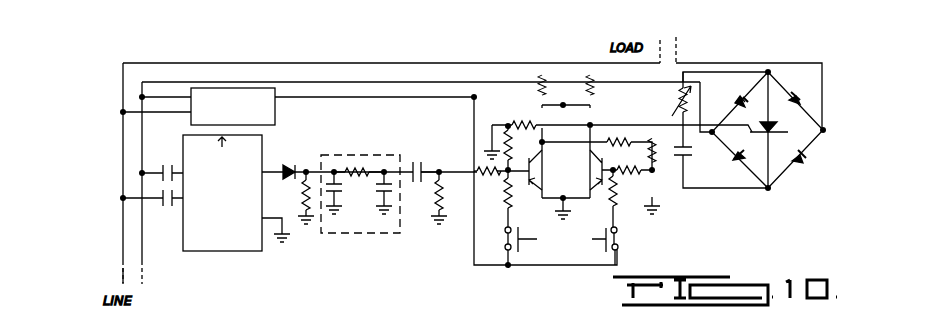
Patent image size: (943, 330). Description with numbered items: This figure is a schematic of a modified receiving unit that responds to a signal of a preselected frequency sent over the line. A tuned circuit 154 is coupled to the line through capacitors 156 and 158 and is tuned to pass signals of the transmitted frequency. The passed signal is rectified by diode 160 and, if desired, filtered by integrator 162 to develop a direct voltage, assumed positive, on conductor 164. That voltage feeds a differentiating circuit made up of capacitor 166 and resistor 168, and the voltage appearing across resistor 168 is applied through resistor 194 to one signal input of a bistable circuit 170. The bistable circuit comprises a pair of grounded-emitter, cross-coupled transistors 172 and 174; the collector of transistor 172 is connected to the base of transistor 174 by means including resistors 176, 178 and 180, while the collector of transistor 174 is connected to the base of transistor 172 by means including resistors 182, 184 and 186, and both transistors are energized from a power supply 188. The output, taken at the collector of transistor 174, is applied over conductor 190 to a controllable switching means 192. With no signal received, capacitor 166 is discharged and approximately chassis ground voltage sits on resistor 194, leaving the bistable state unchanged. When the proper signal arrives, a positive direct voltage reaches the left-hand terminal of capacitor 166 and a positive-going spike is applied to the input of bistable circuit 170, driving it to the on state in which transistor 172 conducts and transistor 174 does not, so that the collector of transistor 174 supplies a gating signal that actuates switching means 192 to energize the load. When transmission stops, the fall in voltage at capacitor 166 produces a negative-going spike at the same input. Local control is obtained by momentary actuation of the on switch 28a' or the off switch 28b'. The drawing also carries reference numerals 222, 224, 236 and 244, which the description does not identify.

The tuned circuit 154 is at (213, 254).
The capacitor 156 is at (165, 170).
The capacitor 158 is at (165, 200).
The diode 160 is at (289, 165).
The integrator 162 is at (350, 155).
The conductor 164 is at (413, 160).
The capacitor 166 is at (423, 164).
The resistor 168 is at (437, 197).
The bistable circuit 170 is at (613, 116).
The transistor 172 is at (538, 165).
The transistor 174 is at (594, 170).
The resistor 176 is at (636, 137).
The resistor 178 is at (661, 186).
The resistor 180 is at (641, 167).
The resistor 182 is at (527, 107).
The resistor 184 is at (487, 140).
The resistor 186 is at (500, 124).
The power supply 188 is at (244, 88).
The conductor 190 is at (650, 122).
The controllable switching means 192 is at (837, 80).
The resistor 194 is at (488, 180).
The on switch 28a' is at (510, 243).
The off switch 28b' is at (581, 250).
The conductor 222 is at (606, 3).
The conductor 224 is at (773, 0).
The load 236 is at (681, 14).
The conductor 244 is at (287, 328).